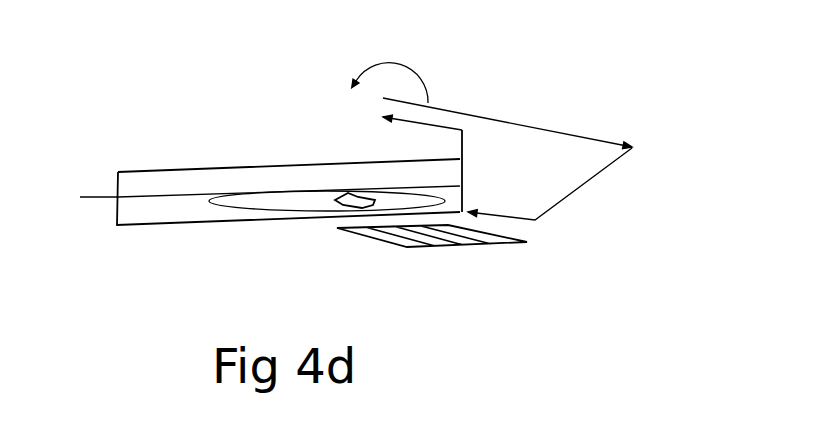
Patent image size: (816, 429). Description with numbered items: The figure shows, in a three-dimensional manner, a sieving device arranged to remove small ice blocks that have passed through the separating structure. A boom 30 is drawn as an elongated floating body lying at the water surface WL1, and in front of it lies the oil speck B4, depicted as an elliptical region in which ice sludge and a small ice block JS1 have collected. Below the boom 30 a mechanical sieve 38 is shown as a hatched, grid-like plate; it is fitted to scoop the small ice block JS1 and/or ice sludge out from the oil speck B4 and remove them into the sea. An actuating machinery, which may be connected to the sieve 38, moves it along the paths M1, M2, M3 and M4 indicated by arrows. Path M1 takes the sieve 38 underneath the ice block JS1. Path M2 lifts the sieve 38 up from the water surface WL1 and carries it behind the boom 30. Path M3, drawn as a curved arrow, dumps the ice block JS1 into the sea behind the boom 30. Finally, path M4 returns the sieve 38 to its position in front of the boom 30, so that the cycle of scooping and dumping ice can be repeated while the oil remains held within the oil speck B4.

The boom 30 is at (163, 170).
The water surface WL1 is at (93, 197).
The oil speck B4 is at (208, 200).
The small ice block JS1 is at (352, 192).
The mechanical sieve 38 is at (503, 243).
The path M1 is at (550, 184).
The path M2 is at (422, 136).
The path M3 is at (390, 69).
The path M4 is at (507, 122).